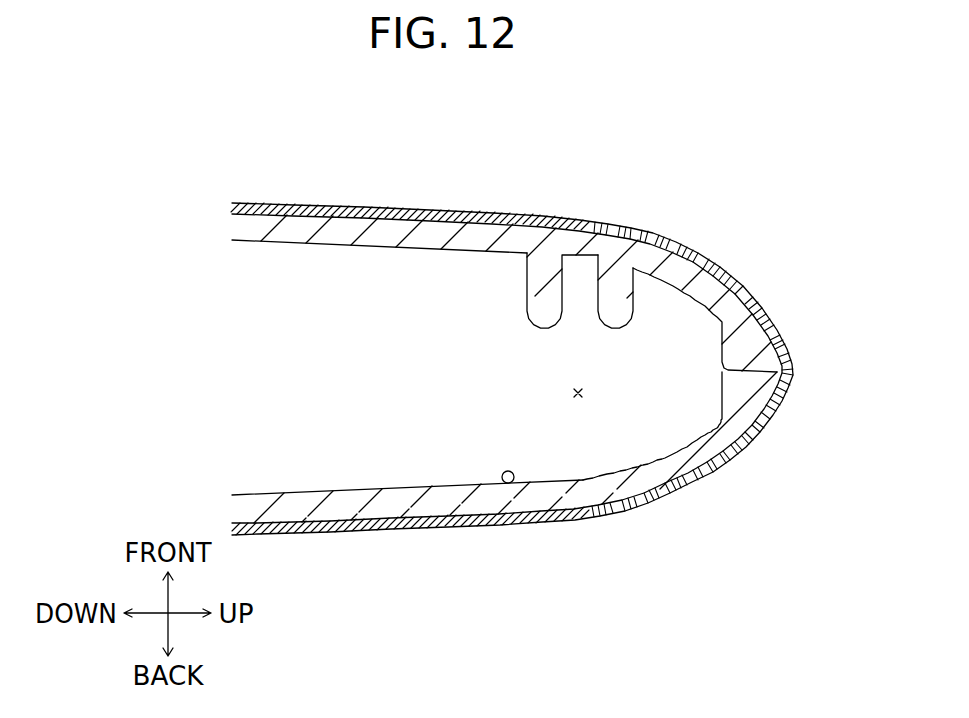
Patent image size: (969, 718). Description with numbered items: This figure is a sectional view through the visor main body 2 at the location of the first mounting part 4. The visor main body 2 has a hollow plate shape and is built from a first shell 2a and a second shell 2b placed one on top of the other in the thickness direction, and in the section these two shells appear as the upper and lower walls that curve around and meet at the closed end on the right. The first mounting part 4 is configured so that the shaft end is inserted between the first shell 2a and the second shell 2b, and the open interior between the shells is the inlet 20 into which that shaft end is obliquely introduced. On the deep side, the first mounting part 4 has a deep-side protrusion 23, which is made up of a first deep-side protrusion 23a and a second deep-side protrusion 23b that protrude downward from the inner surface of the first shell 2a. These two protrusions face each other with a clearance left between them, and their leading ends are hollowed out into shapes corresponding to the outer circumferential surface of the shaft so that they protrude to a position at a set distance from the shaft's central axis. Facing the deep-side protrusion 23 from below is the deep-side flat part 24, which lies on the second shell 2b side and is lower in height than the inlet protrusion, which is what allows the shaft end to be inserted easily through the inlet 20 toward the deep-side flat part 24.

The visor main body 2 is at (325, 190).
The first mounting part 4 is at (445, 204).
The first shell 2a is at (398, 236).
The second shell 2b is at (388, 505).
The inlet 20 is at (578, 396).
The deep-side protrusion 23 is at (622, 222).
The first deep-side protrusion 23a is at (543, 308).
The second deep-side protrusion 23b is at (620, 313).
The deep-side flat part 24 is at (508, 484).